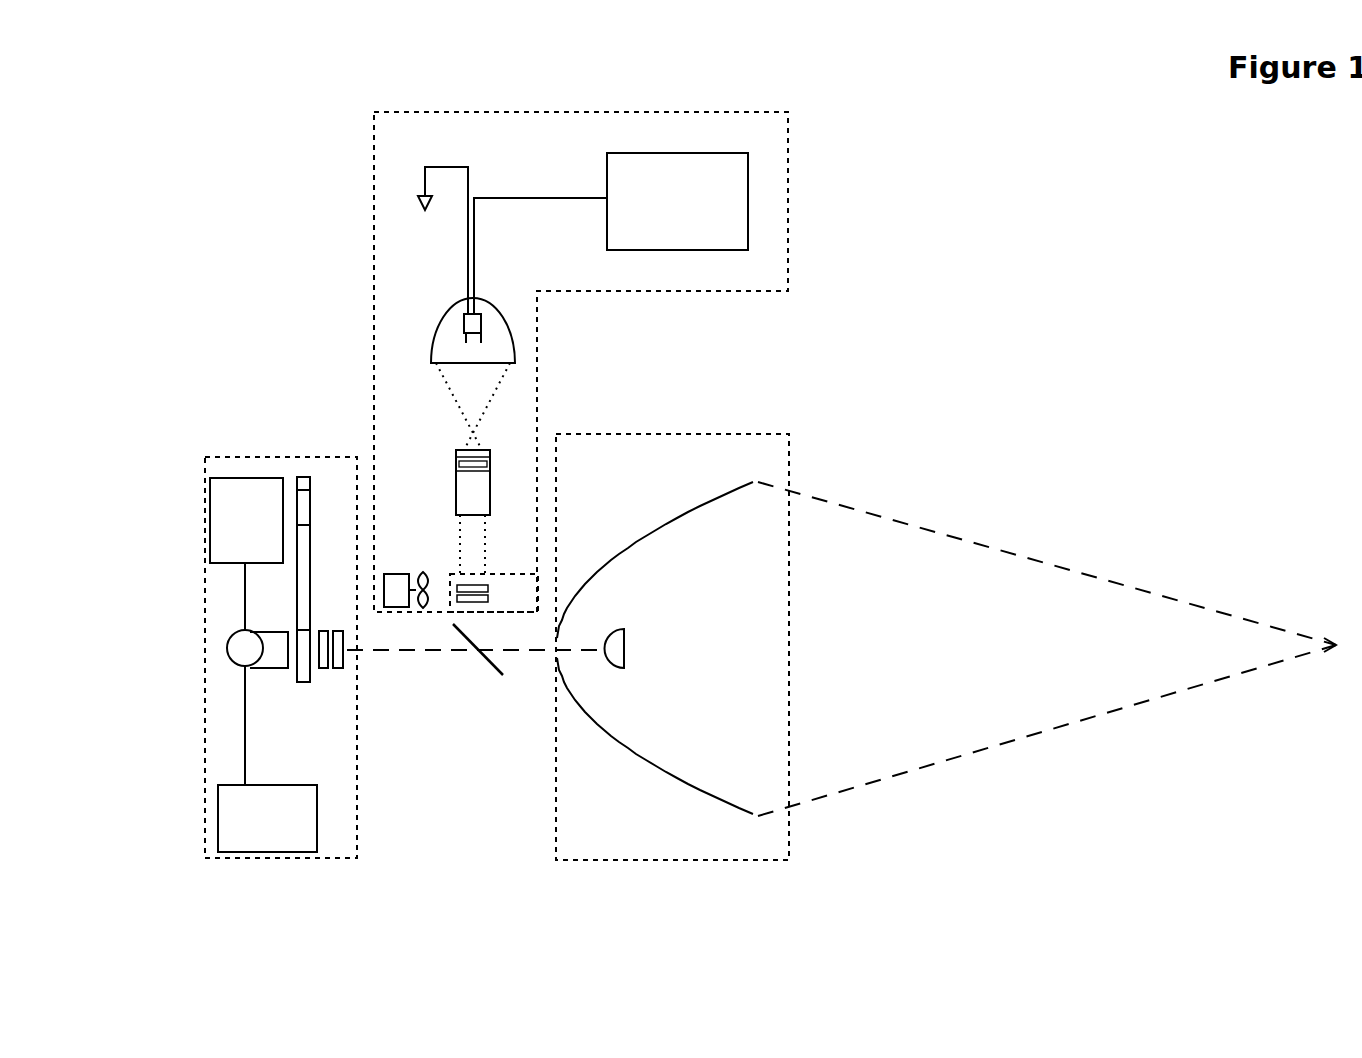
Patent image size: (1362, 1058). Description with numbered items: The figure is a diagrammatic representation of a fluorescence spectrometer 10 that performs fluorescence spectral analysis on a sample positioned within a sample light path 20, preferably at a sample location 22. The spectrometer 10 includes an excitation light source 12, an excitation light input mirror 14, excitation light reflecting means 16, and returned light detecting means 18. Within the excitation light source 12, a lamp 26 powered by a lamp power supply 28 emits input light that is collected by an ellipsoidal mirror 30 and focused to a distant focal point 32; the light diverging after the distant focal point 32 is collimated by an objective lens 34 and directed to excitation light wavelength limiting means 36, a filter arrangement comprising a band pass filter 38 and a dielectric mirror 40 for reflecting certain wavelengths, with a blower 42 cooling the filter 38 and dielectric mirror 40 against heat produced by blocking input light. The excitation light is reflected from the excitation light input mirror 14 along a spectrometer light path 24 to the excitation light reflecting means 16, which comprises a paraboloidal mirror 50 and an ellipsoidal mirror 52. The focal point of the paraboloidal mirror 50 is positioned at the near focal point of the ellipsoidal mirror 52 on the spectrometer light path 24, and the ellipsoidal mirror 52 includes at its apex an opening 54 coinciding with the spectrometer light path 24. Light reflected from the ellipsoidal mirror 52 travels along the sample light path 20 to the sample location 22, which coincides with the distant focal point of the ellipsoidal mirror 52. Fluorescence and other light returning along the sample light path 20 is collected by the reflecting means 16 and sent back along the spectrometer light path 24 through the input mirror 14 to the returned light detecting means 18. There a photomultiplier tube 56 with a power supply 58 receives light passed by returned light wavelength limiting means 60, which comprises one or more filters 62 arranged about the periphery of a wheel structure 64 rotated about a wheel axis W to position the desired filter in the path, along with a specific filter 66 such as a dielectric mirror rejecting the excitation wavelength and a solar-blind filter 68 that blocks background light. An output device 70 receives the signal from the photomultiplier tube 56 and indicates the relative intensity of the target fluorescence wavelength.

The fluorescence spectrometer 10 is at (1009, 238).
The excitation light source 12 is at (788, 157).
The excitation light input mirror 14 is at (479, 662).
The excitation light reflecting means 16 is at (789, 456).
The returned light detecting means 18 is at (205, 853).
The sample light path 20 is at (937, 646).
The sample location 22 is at (1333, 644).
The spectrometer light path 24 is at (432, 651).
The lamp 26 is at (529, 302).
The lamp power supply 28 is at (607, 153).
The ellipsoidal mirror 30 is at (438, 328).
The distant focal point 32 is at (470, 427).
The objective lens 34 is at (524, 485).
The excitation light wavelength limiting means 36 is at (526, 556).
The band pass filter 38 is at (488, 586).
The dielectric mirror 40 is at (488, 597).
The blower 42 is at (397, 574).
The paraboloidal mirror 50 is at (613, 628).
The ellipsoidal mirror 52 is at (663, 777).
The opening 54 is at (561, 659).
The photomultiplier tube 56 is at (227, 650).
The power supply 58 is at (232, 478).
The returned light wavelength limiting means 60 is at (333, 693).
The filters 62 is at (290, 480).
The wheel structure 64 is at (310, 537).
The specific filter 66 is at (320, 670).
The solar-blind filter 68 is at (338, 670).
The output device 70 is at (300, 852).
The wheel axis W is at (310, 587).